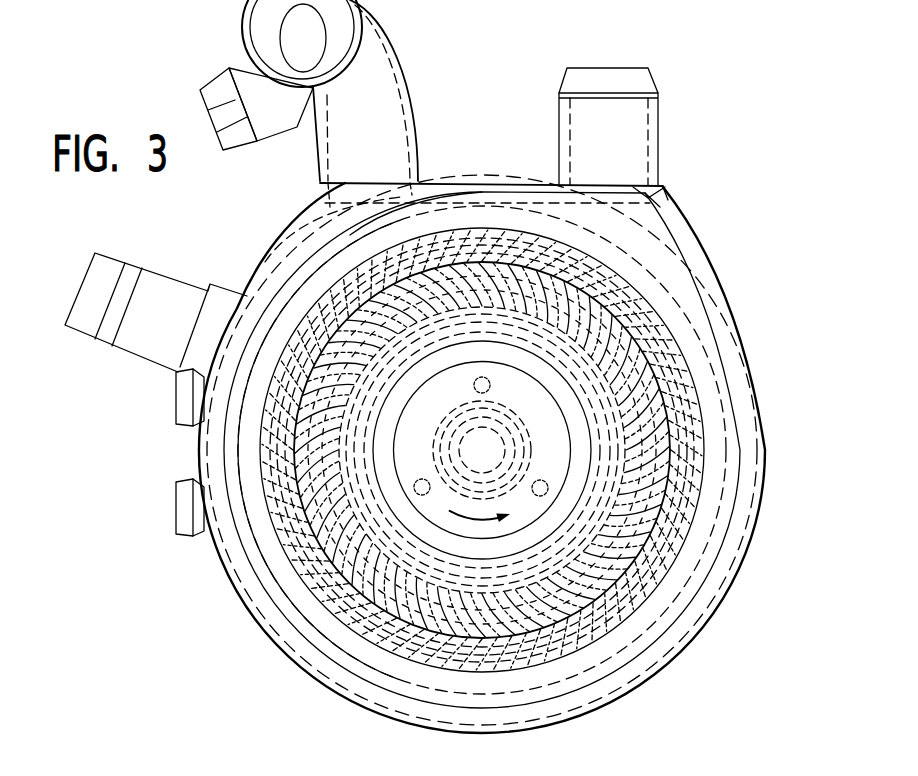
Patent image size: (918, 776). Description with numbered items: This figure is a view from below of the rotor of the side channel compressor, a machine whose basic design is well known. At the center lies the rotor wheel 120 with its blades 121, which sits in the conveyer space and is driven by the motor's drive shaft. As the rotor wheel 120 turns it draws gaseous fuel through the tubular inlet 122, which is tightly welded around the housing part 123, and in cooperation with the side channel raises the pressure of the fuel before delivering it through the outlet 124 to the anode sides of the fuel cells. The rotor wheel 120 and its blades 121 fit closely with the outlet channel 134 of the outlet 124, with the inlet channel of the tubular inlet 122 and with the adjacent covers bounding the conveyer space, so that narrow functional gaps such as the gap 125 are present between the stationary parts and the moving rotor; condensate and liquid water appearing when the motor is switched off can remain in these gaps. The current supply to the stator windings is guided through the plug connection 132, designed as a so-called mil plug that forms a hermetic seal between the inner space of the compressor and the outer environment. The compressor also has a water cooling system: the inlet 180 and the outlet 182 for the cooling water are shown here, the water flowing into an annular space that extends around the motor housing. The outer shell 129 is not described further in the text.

The rotor wheel 120 is at (377, 517).
The blades 121 is at (600, 690).
The tubular inlet 122 is at (258, 24).
The housing part 123 is at (305, 222).
The outlet 124 is at (623, 83).
The narrow functional gap 125 is at (290, 295).
The housing outer shell 129 is at (713, 249).
The plug connection 132 is at (132, 342).
The outlet channel 134 is at (670, 208).
The inlet 180 is at (178, 400).
The outlet 182 is at (178, 503).